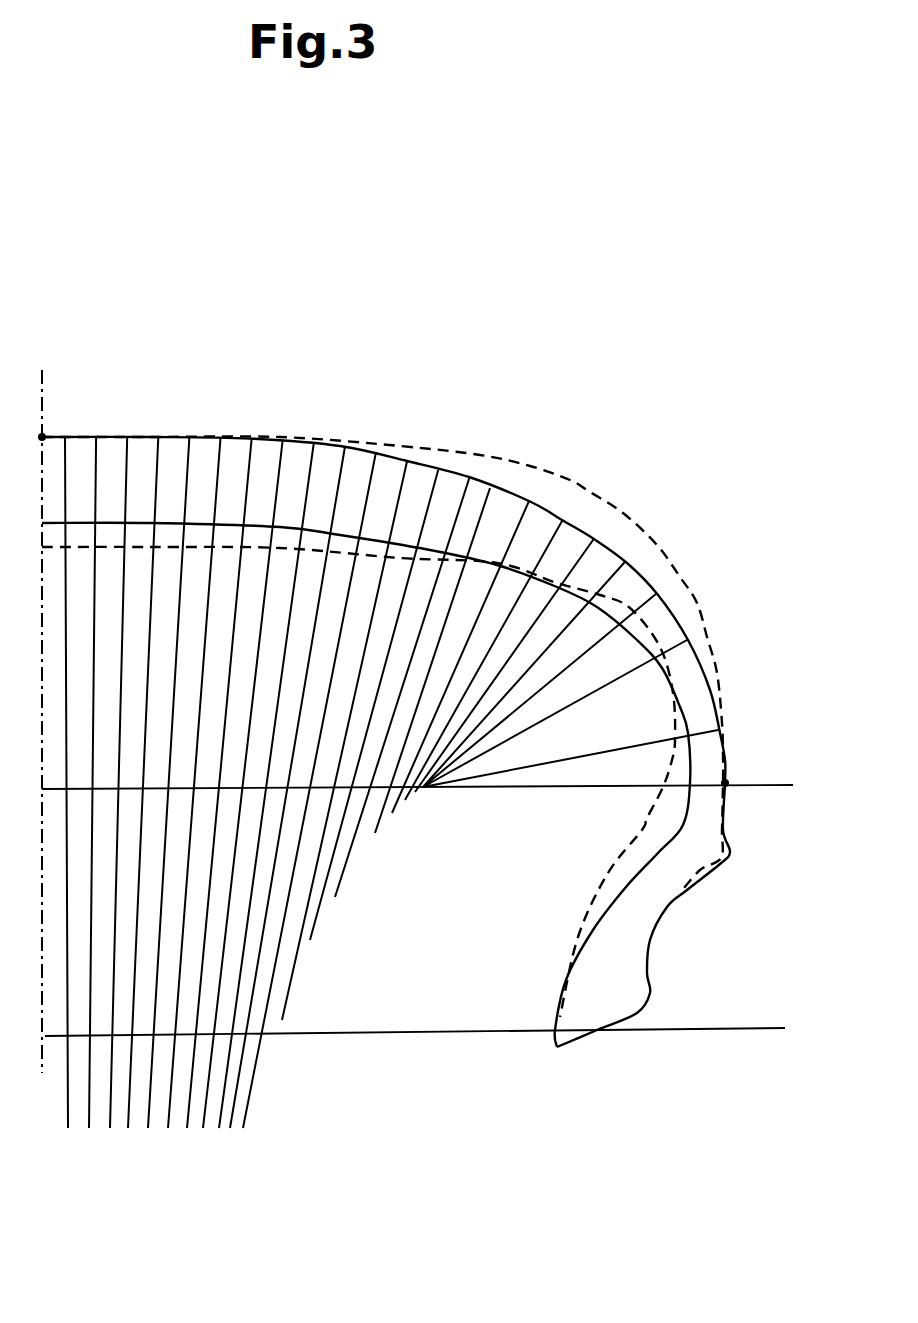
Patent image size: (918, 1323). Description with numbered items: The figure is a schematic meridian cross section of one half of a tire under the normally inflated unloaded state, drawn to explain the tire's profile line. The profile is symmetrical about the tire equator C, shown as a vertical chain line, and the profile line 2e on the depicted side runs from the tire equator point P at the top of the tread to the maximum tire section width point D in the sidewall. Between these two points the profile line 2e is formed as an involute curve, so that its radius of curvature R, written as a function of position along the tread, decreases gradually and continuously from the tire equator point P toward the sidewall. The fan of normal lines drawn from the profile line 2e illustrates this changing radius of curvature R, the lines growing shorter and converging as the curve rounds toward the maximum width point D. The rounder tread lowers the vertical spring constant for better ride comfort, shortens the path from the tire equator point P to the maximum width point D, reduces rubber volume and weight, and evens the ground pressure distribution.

The profile line 2e is at (556, 490).
The tire equator C is at (38, 704).
The tire equator point P is at (44, 435).
The maximum tire section width point D is at (727, 780).
The radius of curvature R is at (602, 702).